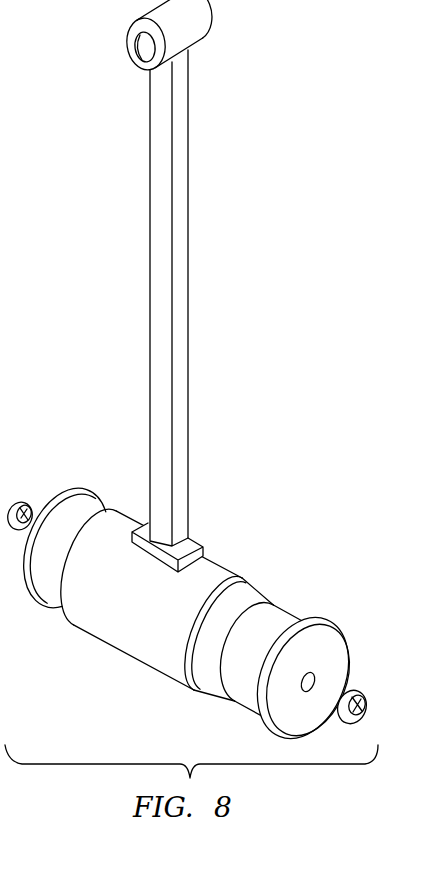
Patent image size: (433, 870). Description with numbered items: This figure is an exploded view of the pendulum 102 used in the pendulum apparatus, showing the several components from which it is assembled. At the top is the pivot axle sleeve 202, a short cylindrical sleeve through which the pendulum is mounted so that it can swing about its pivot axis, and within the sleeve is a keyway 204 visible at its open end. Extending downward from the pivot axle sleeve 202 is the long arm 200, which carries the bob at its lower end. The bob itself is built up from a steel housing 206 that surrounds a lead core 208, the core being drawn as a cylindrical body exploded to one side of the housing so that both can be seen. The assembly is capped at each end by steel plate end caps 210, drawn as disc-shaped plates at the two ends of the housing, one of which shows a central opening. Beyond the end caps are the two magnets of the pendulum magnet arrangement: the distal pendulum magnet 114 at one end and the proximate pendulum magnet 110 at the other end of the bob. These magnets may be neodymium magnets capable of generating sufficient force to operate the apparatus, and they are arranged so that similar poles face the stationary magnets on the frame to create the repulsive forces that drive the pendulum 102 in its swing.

The pendulum 102 is at (188, 293).
The proximate pendulum magnet 110 is at (358, 690).
The distal pendulum magnet 114 is at (24, 500).
The arm 200 is at (170, 311).
The pivot axle sleeve 202 is at (174, 45).
The keyway 204 is at (146, 58).
The steel housing 206 is at (113, 622).
The lead core 208 is at (207, 664).
The steel plate end caps 210 is at (87, 491).